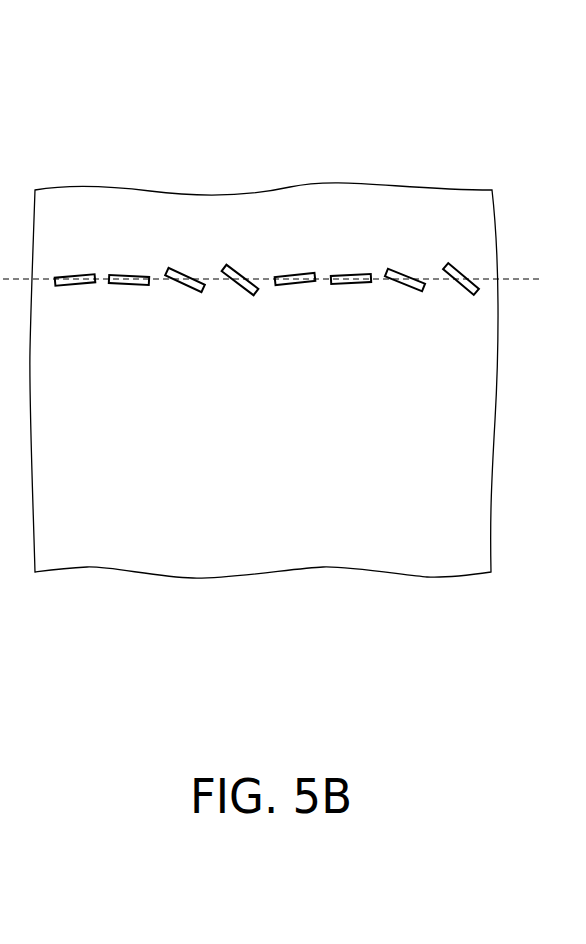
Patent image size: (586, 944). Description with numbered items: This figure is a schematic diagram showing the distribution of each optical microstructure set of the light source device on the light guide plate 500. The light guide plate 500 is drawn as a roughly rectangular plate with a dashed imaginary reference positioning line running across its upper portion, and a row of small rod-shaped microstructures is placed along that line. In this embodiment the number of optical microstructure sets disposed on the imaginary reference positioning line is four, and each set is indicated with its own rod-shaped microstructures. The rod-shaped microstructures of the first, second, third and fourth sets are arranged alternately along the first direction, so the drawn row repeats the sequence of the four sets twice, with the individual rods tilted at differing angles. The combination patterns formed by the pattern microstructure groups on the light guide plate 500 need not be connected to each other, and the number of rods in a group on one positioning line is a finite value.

The light guide plate 500 is at (485, 229).